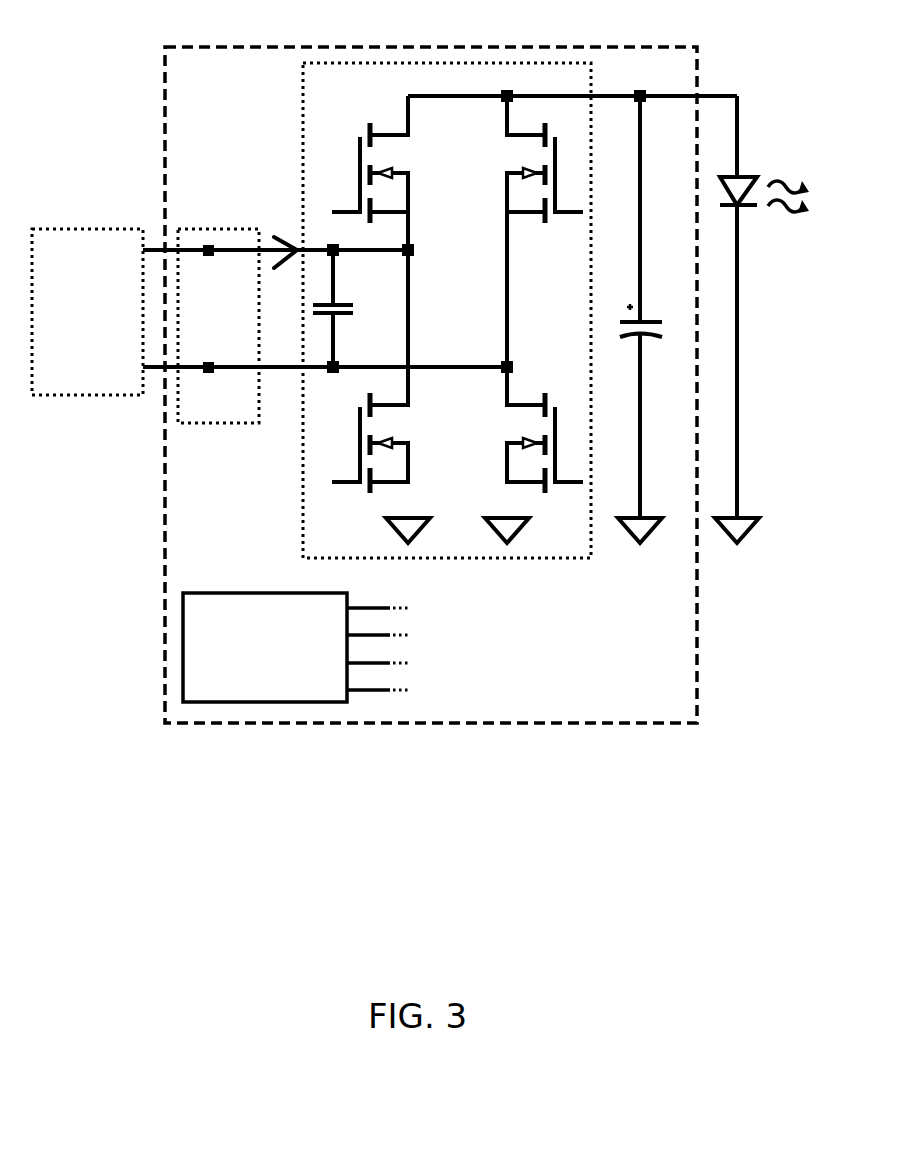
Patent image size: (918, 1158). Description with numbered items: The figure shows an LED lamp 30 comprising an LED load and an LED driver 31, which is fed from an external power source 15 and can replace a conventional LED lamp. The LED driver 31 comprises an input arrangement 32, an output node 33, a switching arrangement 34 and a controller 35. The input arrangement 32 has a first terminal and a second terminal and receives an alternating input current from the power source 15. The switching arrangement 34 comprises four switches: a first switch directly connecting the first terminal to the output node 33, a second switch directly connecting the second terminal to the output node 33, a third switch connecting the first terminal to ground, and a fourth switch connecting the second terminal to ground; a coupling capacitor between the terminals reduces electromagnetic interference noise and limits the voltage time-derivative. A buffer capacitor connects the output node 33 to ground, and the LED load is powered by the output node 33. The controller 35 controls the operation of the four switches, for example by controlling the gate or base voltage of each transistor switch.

The AC power source 15 is at (87, 312).
The LED lamp 30 is at (226, 871).
The LED driver 31 is at (430, 45).
The input arrangement 32 is at (220, 228).
The output node 33 is at (639, 91).
The switching arrangement 34 is at (300, 486).
The controller 35 is at (313, 648).